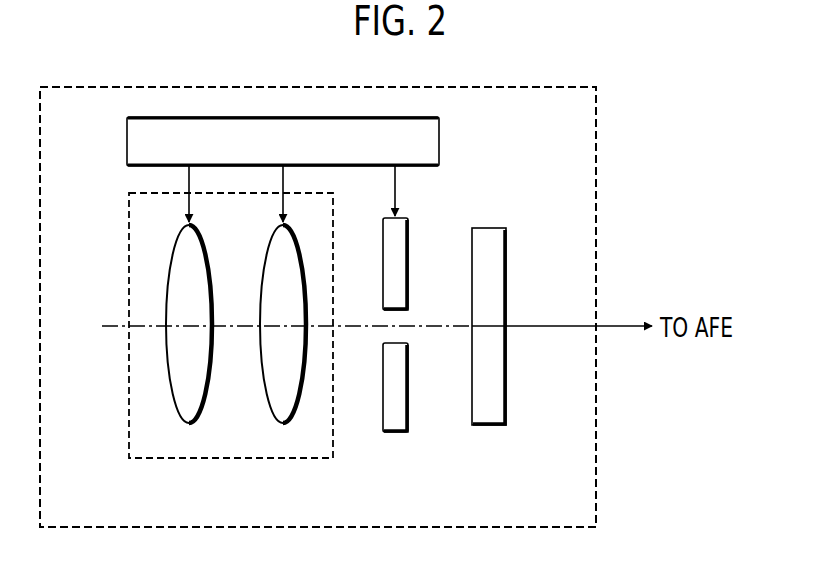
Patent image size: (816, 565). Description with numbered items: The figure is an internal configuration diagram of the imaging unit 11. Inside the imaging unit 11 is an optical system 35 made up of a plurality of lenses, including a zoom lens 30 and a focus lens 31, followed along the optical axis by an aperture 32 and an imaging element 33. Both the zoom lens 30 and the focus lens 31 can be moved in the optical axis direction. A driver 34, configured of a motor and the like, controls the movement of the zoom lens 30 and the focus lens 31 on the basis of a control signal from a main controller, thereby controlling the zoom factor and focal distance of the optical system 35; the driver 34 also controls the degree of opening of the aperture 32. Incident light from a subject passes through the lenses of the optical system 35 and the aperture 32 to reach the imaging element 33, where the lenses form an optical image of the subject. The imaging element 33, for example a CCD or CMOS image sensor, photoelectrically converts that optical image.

The imaging unit 11 is at (596, 137).
The zoom lens 30 is at (189, 423).
The focus lens 31 is at (283, 423).
The aperture 32 is at (399, 432).
The imaging element 33 is at (504, 412).
The driver 34 is at (439, 135).
The optical system 35 is at (129, 427).